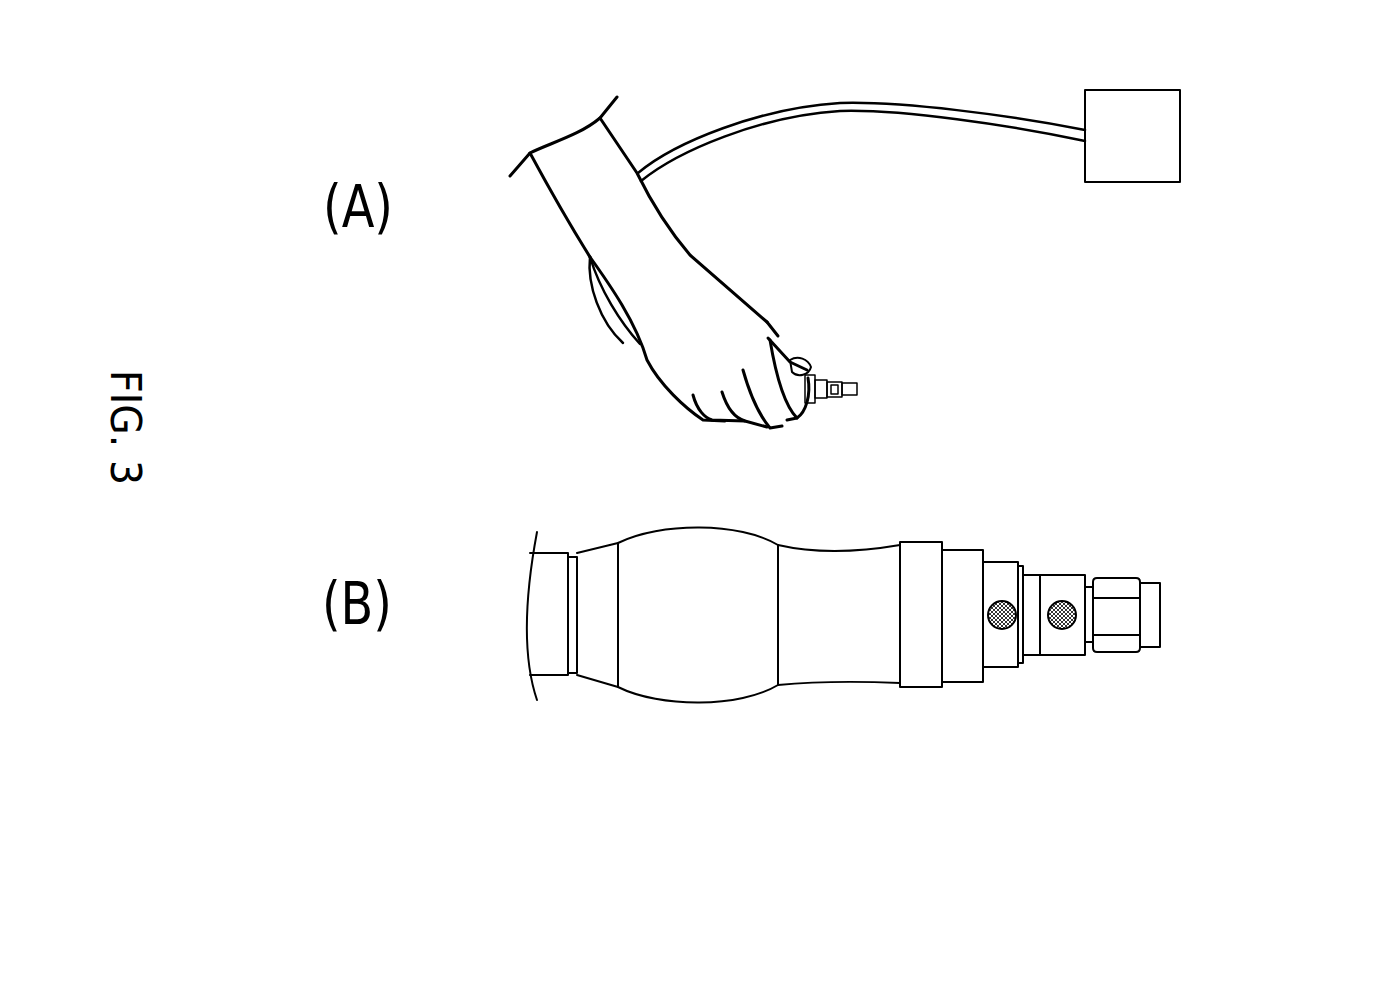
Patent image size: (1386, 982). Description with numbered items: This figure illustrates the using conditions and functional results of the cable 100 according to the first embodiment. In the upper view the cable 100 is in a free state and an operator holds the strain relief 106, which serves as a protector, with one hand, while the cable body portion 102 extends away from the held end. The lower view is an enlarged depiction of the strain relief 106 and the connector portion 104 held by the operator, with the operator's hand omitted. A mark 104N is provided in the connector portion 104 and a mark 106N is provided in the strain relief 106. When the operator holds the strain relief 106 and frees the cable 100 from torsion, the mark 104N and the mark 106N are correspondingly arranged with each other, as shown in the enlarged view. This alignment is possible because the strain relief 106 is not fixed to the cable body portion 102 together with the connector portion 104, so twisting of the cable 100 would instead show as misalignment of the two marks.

The cable 100 is at (1020, 393).
The cable body portion 102 is at (623, 344).
The connector portion 104 is at (1125, 652).
The mark 104N is at (1058, 598).
The strain relief 106 is at (796, 383).
The mark 106N is at (1003, 632).